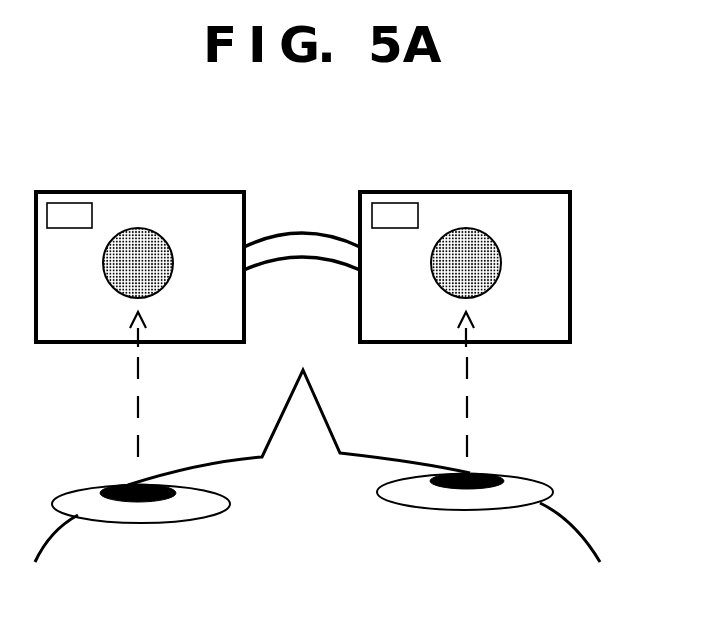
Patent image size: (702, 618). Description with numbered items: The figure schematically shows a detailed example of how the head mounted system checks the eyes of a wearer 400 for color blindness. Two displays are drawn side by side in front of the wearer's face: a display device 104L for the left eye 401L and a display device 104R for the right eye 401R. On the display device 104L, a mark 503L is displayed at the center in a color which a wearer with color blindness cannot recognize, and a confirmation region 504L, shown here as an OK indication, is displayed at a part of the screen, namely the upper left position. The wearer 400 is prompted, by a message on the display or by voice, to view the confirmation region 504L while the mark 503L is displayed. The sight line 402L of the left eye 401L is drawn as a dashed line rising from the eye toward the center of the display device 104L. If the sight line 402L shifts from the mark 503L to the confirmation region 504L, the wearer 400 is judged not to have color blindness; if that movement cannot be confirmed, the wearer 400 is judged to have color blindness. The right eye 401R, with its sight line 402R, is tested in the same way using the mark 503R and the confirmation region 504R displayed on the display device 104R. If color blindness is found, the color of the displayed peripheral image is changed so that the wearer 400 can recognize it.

The display device 104L is at (110, 192).
The display device 104R is at (437, 192).
The mark 503L is at (153, 230).
The mark 503R is at (480, 230).
The confirmation region 504L is at (63, 203).
The confirmation region 504R is at (380, 203).
The sight line 402L is at (140, 418).
The sight line 402R is at (468, 418).
The left eye 401L is at (193, 487).
The right eye 401R is at (518, 475).
The wearer 400 is at (577, 530).